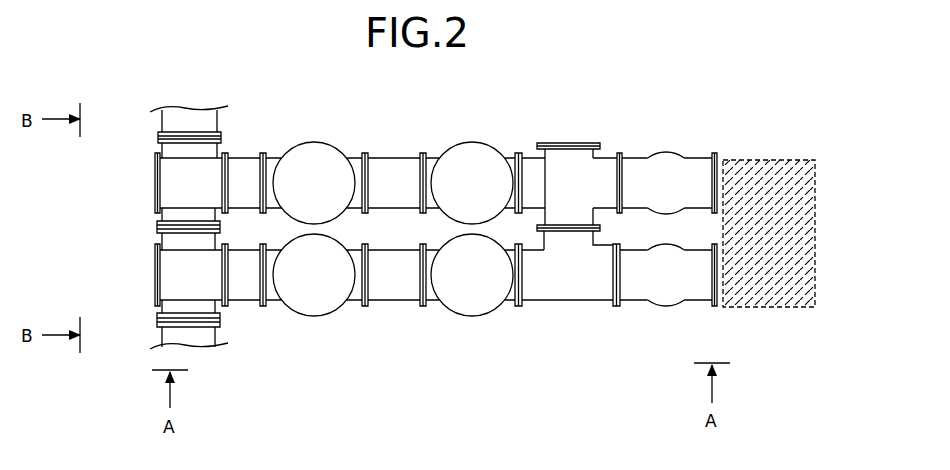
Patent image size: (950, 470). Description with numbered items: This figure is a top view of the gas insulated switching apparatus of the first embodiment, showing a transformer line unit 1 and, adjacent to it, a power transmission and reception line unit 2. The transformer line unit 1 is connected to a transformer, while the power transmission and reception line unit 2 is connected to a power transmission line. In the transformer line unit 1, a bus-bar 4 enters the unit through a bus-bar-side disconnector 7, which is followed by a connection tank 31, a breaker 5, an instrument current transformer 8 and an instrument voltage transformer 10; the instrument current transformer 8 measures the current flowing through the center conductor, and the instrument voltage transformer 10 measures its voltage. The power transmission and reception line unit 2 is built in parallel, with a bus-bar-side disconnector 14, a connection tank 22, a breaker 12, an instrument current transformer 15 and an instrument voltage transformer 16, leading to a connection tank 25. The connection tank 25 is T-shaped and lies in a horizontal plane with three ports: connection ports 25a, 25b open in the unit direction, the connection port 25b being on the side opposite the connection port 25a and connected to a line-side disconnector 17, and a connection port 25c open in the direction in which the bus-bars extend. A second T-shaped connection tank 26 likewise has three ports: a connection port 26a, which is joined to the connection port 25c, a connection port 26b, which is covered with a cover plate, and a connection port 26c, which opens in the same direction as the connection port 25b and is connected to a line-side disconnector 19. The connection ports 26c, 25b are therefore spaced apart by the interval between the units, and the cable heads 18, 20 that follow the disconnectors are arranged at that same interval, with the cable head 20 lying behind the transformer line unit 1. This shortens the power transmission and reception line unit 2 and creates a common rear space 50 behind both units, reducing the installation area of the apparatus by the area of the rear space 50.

The transformer line unit 1 is at (86, 181).
The power transmission and reception line unit 2 is at (86, 274).
The bus-bar 4 is at (170, 122).
The breaker 5 is at (314, 142).
The bus-bar-side disconnector 7 is at (170, 183).
The instrument current transformer 8 is at (396, 157).
The instrument voltage transformer 10 is at (473, 142).
The breaker 12 is at (313, 316).
The bus-bar-side disconnector 14 is at (170, 276).
The instrument current transformer 15 is at (395, 300).
The instrument voltage transformer 16 is at (471, 316).
The line-side disconnector 17 is at (632, 300).
The cable head 18 is at (666, 308).
The line-side disconnector 19 is at (695, 158).
The cable head 20 is at (667, 152).
The connection tank 22 is at (245, 300).
The connection tank 25 is at (570, 300).
The connection port 25a is at (541, 288).
The connection port 25b is at (597, 288).
The connection port 25c is at (585, 245).
The connection tank 26 is at (570, 167).
The connection port 26a is at (545, 214).
The connection port 26b is at (551, 162).
The connection port 26c is at (605, 164).
The connection tank 31 is at (245, 157).
The rear space 50 is at (773, 159).